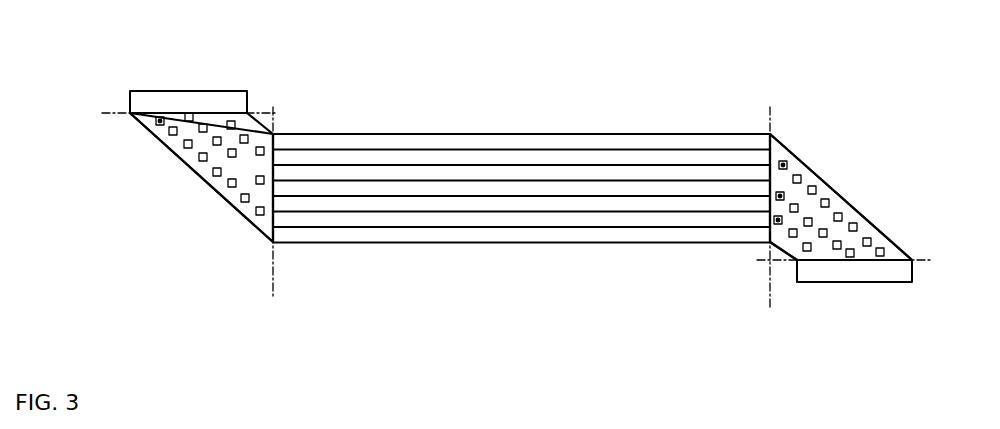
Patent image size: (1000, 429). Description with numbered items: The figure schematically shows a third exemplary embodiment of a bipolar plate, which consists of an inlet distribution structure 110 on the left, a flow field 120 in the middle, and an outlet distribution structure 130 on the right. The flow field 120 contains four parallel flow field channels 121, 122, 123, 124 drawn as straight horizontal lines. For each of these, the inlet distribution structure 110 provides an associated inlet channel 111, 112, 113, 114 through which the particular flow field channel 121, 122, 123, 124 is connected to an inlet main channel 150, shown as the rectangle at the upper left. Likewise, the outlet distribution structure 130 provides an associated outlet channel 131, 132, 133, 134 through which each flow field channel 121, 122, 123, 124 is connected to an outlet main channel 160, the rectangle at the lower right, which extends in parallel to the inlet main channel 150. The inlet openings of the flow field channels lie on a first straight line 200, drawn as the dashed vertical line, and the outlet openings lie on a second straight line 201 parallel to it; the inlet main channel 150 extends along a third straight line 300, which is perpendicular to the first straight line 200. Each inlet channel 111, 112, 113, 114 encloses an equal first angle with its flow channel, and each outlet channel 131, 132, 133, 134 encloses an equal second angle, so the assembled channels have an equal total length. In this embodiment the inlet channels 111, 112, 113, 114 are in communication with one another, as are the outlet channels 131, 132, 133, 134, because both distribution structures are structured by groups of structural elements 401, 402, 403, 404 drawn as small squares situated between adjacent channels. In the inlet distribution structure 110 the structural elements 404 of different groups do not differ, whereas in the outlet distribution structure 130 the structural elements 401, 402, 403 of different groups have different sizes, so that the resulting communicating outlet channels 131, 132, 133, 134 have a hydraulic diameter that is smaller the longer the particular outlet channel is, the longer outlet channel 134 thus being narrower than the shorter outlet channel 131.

The inlet distribution structure 110 is at (93, 248).
The inlet channel 111 is at (243, 216).
The inlet channel 112 is at (241, 177).
The inlet channel 113 is at (223, 132).
The inlet channel 114 is at (258, 125).
The flow field 120 is at (376, 260).
The flow field channel 121 is at (509, 227).
The flow field channel 122 is at (407, 197).
The flow field channel 123 is at (463, 166).
The flow field channel 124 is at (383, 134).
The outlet distribution structure 130 is at (879, 115).
The outlet channel 131 is at (778, 248).
The outlet channel 132 is at (823, 245).
The outlet channel 133 is at (822, 218).
The outlet channel 134 is at (809, 177).
The inlet main channel 150 is at (183, 91).
The outlet main channel 160 is at (828, 281).
The first straight line 200 is at (268, 277).
The second straight line 201 is at (770, 277).
The third straight line 300 is at (113, 111).
The structural element 401 is at (783, 165).
The structural element 402 is at (780, 196).
The structural element 403 is at (778, 221).
The structural element 404 is at (160, 121).